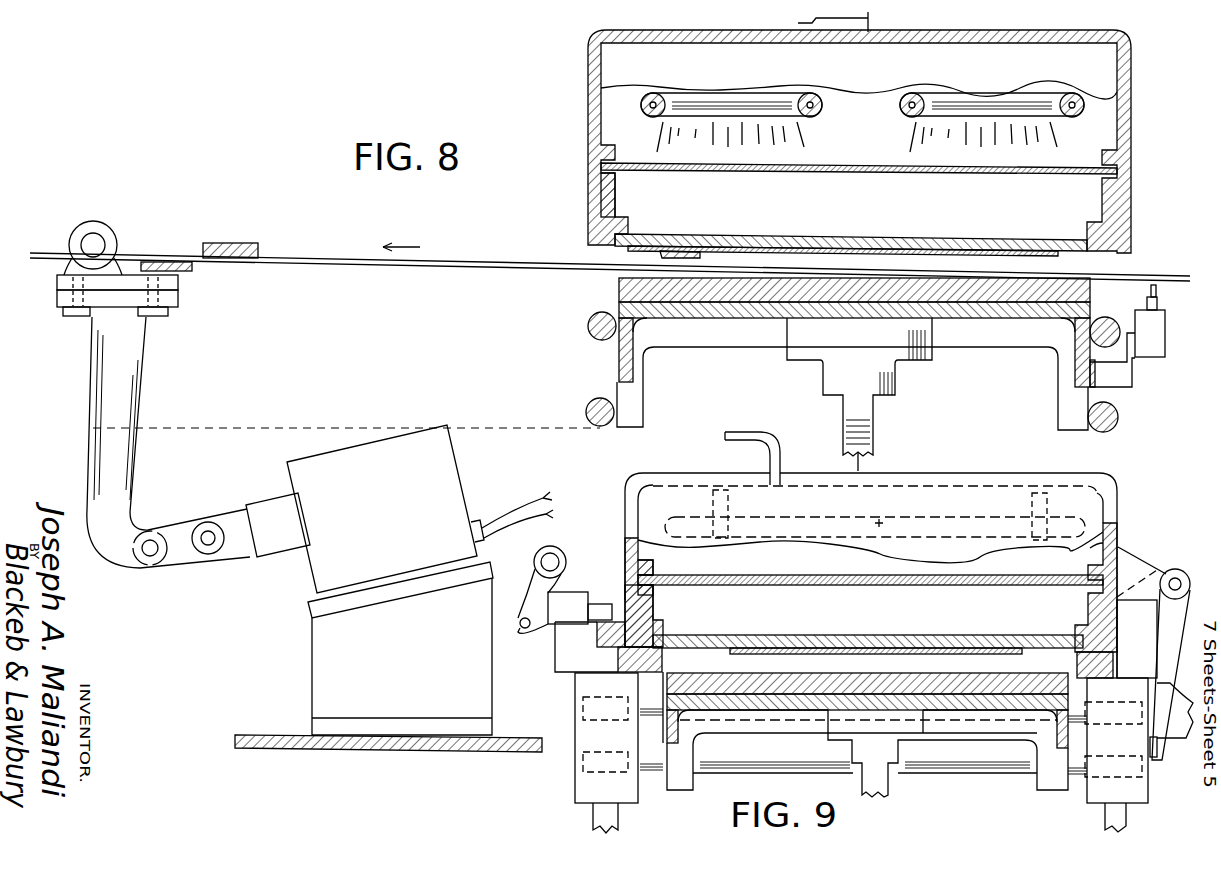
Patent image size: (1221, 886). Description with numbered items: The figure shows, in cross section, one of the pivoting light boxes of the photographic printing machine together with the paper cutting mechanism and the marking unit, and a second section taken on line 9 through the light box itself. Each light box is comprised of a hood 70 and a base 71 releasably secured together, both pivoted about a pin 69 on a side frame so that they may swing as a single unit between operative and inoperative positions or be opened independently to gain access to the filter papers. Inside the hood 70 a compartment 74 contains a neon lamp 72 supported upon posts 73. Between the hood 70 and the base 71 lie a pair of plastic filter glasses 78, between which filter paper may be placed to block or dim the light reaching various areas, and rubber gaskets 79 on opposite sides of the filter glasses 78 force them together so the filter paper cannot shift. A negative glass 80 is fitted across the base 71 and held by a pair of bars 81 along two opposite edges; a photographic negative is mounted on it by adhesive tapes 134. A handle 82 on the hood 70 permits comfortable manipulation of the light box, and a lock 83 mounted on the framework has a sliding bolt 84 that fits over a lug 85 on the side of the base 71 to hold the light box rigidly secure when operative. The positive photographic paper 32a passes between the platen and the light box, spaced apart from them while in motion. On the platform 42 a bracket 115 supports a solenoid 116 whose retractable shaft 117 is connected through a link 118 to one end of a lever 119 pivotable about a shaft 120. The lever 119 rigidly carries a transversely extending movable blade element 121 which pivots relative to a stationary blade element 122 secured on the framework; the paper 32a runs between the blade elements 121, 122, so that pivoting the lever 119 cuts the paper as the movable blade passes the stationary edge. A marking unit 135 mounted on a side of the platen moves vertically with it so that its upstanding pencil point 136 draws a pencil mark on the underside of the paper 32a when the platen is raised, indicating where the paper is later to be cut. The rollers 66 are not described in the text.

In FIG. 8, the section line 9— 9 is at (868, 22).
In FIG. 8, the positive paper 32a is at (447, 265).
In FIG. 8, the platform 42 is at (272, 735).
In FIG. 8, the rollers 66 is at (590, 318).
In FIG. 9, the rollers 66 is at (605, 685).
In FIG. 9, the pin 69 is at (1172, 572).
In FIG. 8, the hood 70 is at (588, 119).
In FIG. 9, the hood 70 is at (1082, 474).
In FIG. 8, the base 71 is at (590, 206).
In FIG. 9, the base 71 is at (650, 608).
In FIG. 8, the neon lamp 72 is at (737, 100).
In FIG. 9, the neon lamp 72 is at (883, 522).
In FIG. 9, the posts 73 is at (735, 505).
In FIG. 9, the compartment 74 is at (1119, 540).
In FIG. 8, the filter glasses 78 is at (826, 166).
In FIG. 9, the filter glasses 78 is at (812, 562).
In FIG. 9, the rubber gaskets 79 is at (653, 572).
In FIG. 8, the negative glass 80 is at (713, 235).
In FIG. 9, the negative glass 80 is at (930, 636).
In FIG. 9, the bars 81 is at (662, 660).
In FIG. 8, the handle 82 is at (812, 23).
In FIG. 9, the handle 82 is at (736, 432).
In FIG. 9, the lock 83 is at (572, 592).
In FIG. 9, the sliding bolt 84 is at (598, 604).
In FIG. 9, the lug 85 is at (607, 633).
In FIG. 8, the bracket 115 is at (335, 650).
In FIG. 8, the solenoid 116 is at (388, 534).
In FIG. 8, the retractable shaft 117 is at (229, 527).
In FIG. 8, the link 118 is at (174, 533).
In FIG. 8, the lever 119 is at (125, 414).
In FIG. 8, the shaft 120 is at (93, 245).
In FIG. 8, the movable blade element 121 is at (192, 270).
In FIG. 8, the stationary blade element 122 is at (240, 243).
In FIG. 8, the adhesive tapes 134 is at (660, 254).
In FIG. 8, the marking unit 135 is at (1150, 347).
In FIG. 8, the pencil point 136 is at (1158, 292).